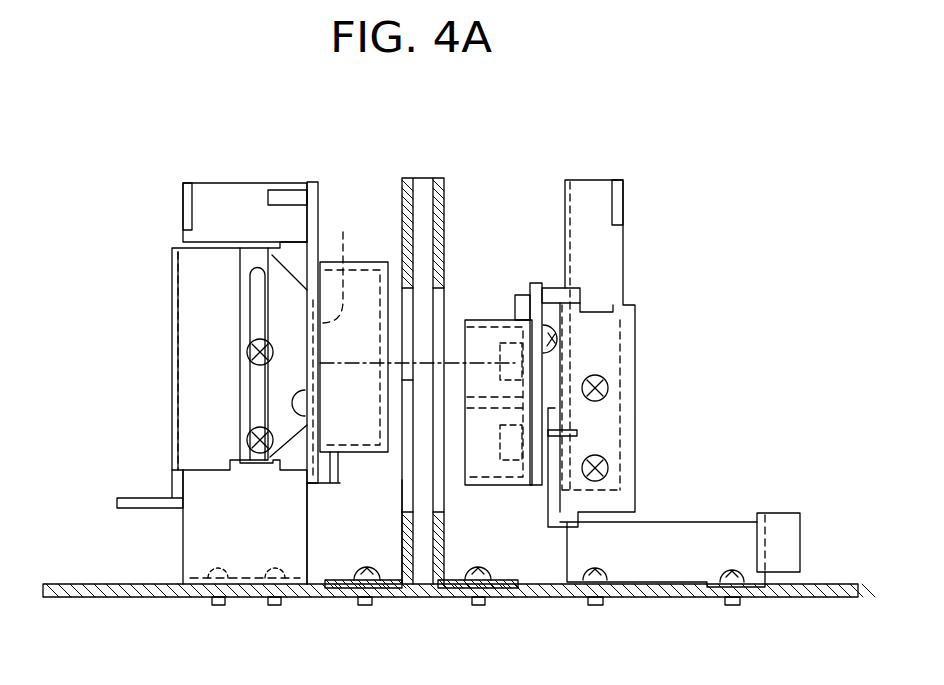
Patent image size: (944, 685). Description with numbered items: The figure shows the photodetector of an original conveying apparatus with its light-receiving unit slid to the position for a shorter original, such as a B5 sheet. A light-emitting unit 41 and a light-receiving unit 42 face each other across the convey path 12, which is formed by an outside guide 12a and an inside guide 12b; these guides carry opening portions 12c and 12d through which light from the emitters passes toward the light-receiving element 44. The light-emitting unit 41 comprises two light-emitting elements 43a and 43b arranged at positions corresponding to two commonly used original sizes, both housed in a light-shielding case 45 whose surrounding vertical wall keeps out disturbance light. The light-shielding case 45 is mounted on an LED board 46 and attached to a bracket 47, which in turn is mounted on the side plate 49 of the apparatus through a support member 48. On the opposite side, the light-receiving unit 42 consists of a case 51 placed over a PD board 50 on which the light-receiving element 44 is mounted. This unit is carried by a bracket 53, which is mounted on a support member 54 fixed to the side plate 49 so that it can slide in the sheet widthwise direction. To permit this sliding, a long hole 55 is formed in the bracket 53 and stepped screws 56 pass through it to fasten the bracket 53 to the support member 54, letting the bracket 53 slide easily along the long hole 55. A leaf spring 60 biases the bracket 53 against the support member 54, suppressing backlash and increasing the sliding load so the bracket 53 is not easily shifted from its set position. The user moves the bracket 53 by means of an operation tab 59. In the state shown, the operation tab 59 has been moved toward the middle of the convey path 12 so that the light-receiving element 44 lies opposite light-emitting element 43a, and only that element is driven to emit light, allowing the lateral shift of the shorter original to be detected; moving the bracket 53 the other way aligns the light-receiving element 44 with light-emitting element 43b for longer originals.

The convey path 12 is at (424, 180).
The outside guide 12a is at (405, 185).
The inside guide 12b is at (445, 182).
The opening portion 12c is at (406, 386).
The opening portion 12d is at (438, 487).
The light-emitting unit 41 is at (473, 318).
The light-receiving unit 42 is at (359, 458).
The light-emitting element 43a is at (510, 343).
The light-emitting element 43b is at (515, 477).
The light-receiving element 44 is at (343, 264).
The light-shielding case 45 is at (490, 487).
The LED board 46 is at (537, 283).
The bracket 47 is at (605, 343).
The support member 48 is at (692, 537).
The side plate 49 is at (830, 585).
The PD board 50 is at (317, 182).
The case 51 is at (378, 260).
The bracket 53 is at (200, 450).
The support member 54 is at (203, 558).
The long hole 55 is at (262, 272).
The stepped screws 56 is at (247, 352).
The operation tab 59 is at (128, 509).
The leaf spring 60 is at (240, 293).